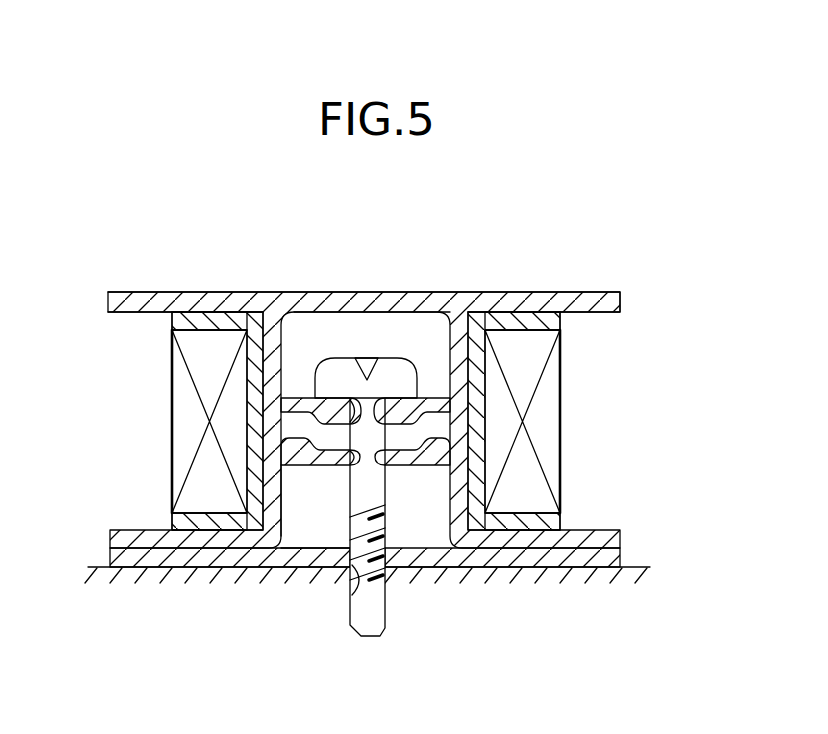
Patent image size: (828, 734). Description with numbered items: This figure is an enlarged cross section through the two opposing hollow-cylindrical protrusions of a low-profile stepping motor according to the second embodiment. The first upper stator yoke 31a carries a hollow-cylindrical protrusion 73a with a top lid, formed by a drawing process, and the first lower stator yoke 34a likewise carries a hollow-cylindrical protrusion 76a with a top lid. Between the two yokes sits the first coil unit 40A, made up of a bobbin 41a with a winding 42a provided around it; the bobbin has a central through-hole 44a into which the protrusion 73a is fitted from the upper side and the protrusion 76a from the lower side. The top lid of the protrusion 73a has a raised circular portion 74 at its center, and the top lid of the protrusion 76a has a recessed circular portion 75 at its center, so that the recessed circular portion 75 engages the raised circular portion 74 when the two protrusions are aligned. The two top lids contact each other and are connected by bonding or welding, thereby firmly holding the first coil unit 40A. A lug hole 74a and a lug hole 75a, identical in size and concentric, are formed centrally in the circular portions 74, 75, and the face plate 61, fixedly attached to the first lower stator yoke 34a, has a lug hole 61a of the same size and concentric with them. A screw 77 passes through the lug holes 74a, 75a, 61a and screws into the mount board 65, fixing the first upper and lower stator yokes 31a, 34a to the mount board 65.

The first upper stator yoke 31a is at (588, 292).
The first lower stator yoke 34a is at (562, 570).
The first coil unit 40A is at (376, 384).
The bobbin 41a is at (178, 322).
The winding 42a is at (182, 427).
The through-hole 44a is at (287, 340).
The face plate 61 is at (193, 563).
The lug hole 61a is at (362, 575).
The mount board 65 is at (503, 573).
The hollow-cylindrical protrusion 73a is at (365, 318).
The raised circular portion 74 is at (400, 420).
The lug hole 74a is at (340, 397).
The recessed circular portion 75 is at (397, 447).
The lug hole 75a is at (350, 466).
The hollow-cylindrical protrusion 76a is at (310, 517).
The screw 77 is at (372, 625).